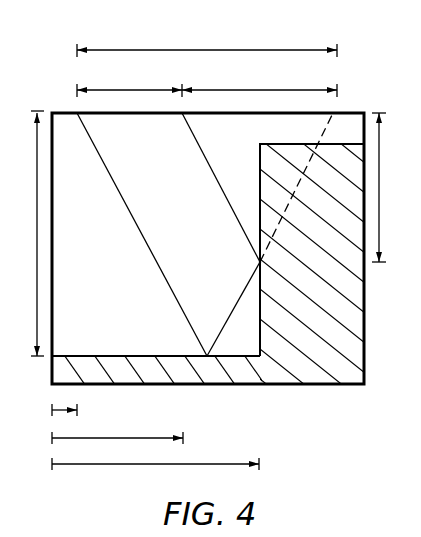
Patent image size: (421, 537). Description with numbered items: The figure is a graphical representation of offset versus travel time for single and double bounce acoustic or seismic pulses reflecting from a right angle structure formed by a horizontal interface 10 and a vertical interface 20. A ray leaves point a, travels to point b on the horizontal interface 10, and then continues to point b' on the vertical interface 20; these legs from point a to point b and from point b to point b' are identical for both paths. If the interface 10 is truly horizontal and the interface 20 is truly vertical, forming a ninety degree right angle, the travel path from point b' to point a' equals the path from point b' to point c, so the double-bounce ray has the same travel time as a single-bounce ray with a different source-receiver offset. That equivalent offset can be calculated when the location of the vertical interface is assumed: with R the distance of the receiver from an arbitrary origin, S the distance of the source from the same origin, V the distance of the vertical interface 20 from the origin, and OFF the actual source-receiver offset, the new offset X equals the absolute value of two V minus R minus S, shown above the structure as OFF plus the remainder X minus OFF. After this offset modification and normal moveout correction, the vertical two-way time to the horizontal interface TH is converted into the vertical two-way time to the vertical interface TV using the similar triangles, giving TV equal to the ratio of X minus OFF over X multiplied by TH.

The interface 10 is at (112, 356).
The interface 20 is at (259, 171).
The point a is at (136, 234).
The point a' is at (210, 187).
The point b is at (233, 309).
The point b' is at (270, 271).
The point c is at (302, 187).
The new offset X is at (207, 43).
The actual source-receiver offset OFF is at (207, 84).
The vertical two-way time to the horizontal interface TH is at (31, 233).
The vertical two-way time to the vertical interface TV is at (385, 187).
The distance of the source from the origin S is at (70, 410).
The distance of the receiver from the origin R is at (124, 438).
The distance of the vertical interface from the origin V is at (162, 464).